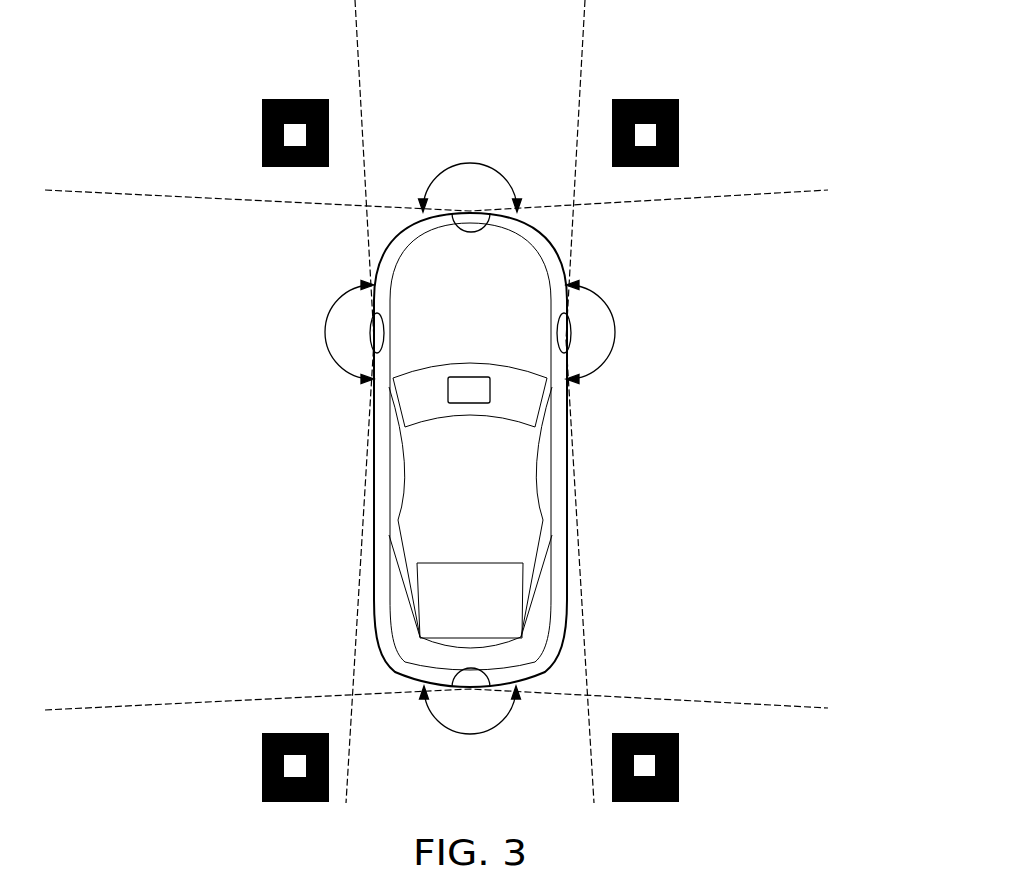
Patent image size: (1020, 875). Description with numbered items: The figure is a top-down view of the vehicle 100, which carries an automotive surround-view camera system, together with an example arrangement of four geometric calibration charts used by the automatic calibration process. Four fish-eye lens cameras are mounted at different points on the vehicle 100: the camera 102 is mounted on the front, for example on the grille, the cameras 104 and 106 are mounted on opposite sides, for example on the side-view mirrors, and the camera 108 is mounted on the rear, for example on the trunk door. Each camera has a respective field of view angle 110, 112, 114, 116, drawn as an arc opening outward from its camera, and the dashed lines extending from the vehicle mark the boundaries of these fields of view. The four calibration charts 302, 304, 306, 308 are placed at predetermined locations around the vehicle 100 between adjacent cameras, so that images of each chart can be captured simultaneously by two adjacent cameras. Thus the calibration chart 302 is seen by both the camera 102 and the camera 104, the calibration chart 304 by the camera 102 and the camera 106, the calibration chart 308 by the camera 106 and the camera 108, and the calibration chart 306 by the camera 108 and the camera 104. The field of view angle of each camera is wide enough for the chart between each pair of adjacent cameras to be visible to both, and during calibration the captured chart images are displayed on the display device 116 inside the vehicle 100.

The vehicle 100 is at (449, 521).
The fish-eye lens camera 102 is at (471, 224).
The fish-eye lens camera 104 is at (381, 328).
The fish-eye lens camera 106 is at (560, 333).
The fish-eye lens camera 108 is at (470, 672).
The field of view angle 110 is at (472, 163).
The field of view angle 112 is at (323, 332).
The field of view angle 114 is at (619, 332).
The field of view angle 116 is at (490, 392).
The calibration chart 302 is at (286, 87).
The calibration chart 304 is at (654, 87).
The calibration chart 306 is at (286, 815).
The calibration chart 308 is at (654, 815).